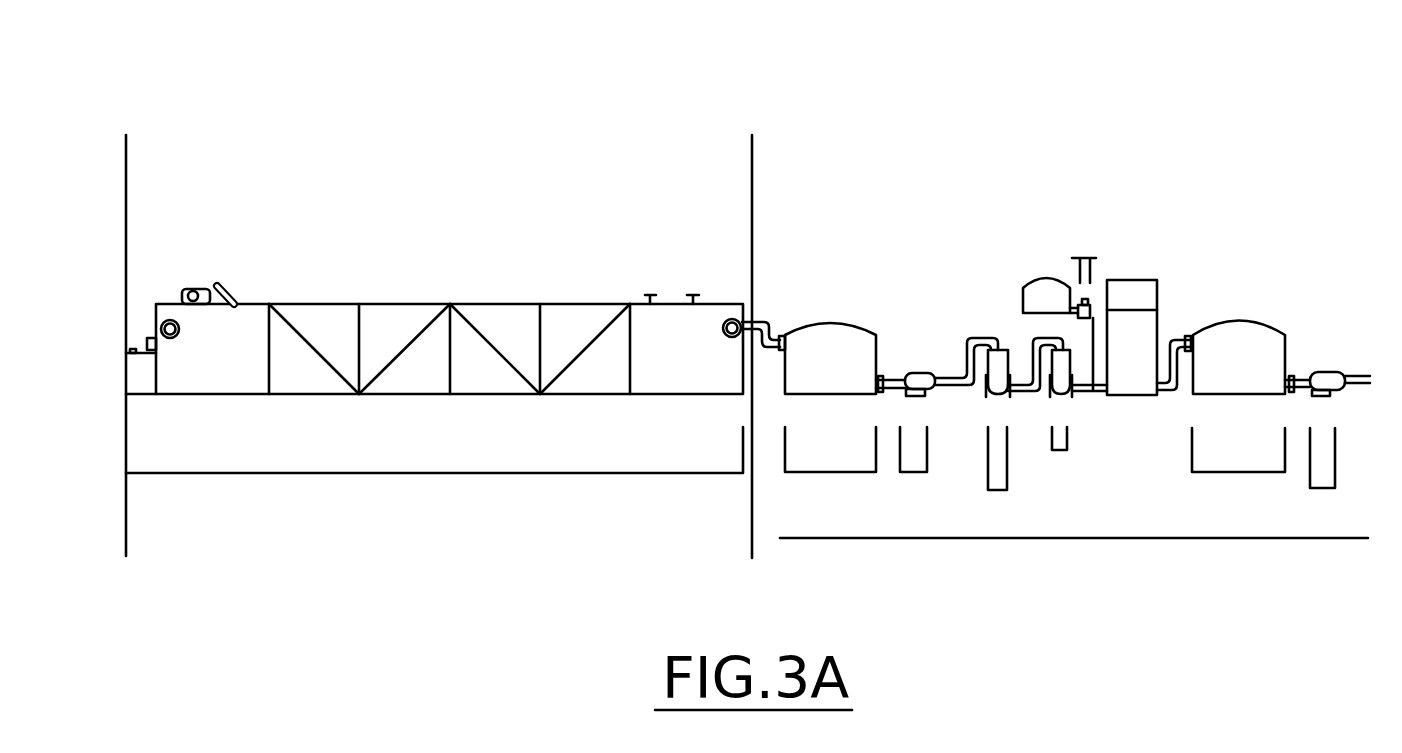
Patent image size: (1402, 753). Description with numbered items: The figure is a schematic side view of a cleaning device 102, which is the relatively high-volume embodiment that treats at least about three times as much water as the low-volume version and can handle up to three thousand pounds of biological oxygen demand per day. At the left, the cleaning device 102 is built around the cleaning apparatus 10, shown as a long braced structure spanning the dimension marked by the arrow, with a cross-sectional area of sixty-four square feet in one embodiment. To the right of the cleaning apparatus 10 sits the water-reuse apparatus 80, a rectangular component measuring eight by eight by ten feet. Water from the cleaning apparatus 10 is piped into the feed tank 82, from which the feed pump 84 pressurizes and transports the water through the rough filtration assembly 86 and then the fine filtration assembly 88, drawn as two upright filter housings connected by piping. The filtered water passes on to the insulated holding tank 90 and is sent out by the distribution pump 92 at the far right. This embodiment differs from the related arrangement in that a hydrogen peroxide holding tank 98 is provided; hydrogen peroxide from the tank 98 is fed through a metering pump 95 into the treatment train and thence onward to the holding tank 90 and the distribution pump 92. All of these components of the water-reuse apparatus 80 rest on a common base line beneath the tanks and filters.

The cleaning device 102 is at (547, 122).
The cleaning apparatus 10 is at (752, 170).
The water-reuse apparatus 80 is at (1100, 538).
The feed tank 82 is at (801, 470).
The feed pump 84 is at (905, 446).
The rough filtration assembly 86 is at (995, 441).
The fine filtration assembly 88 is at (1058, 441).
The insulated holding tank 90 is at (1205, 445).
The distribution pump 92 is at (1318, 446).
The metering pump 95 is at (1089, 300).
The hydrogen peroxide holding tank 98 is at (1070, 255).